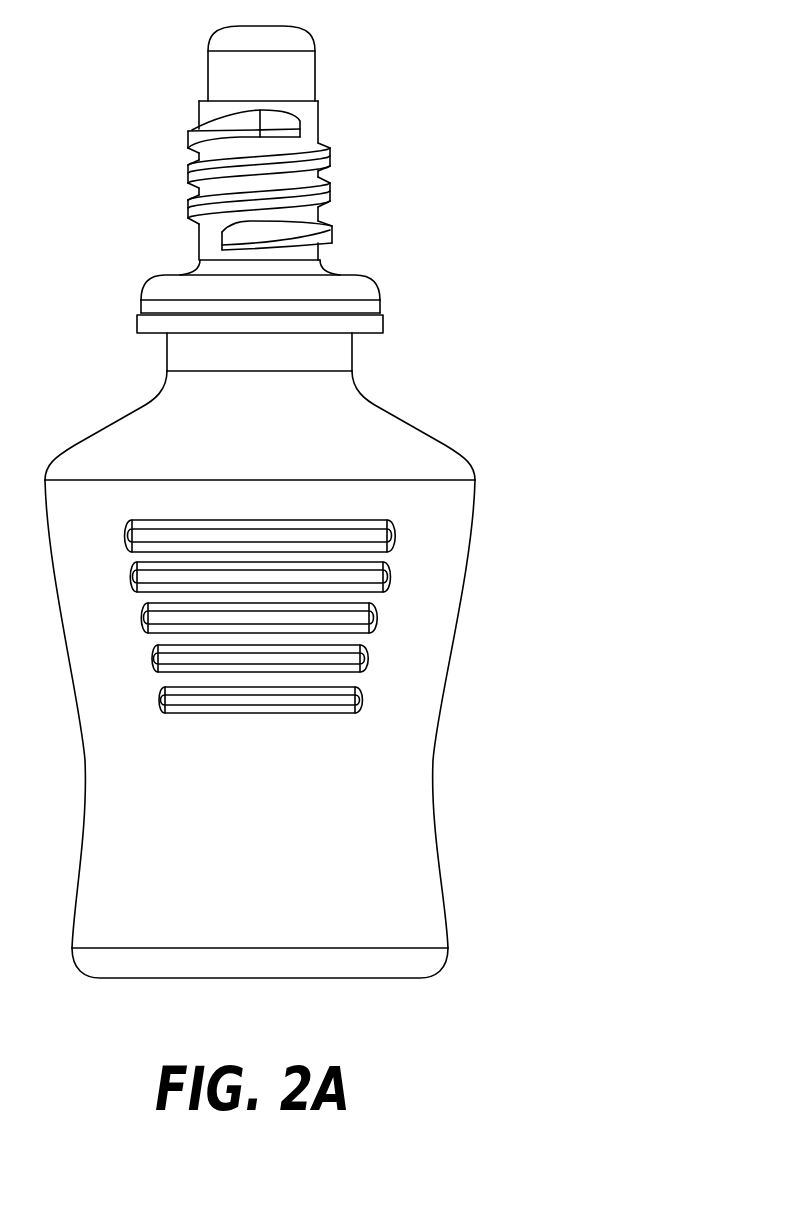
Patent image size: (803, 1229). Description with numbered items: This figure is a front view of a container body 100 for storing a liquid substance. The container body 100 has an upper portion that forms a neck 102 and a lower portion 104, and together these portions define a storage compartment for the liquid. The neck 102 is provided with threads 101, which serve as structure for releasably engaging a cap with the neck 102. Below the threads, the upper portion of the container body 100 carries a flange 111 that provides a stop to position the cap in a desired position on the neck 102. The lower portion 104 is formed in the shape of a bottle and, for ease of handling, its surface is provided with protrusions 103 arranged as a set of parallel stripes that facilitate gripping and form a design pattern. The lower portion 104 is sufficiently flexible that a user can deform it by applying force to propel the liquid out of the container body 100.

The container body 100 is at (353, 502).
The threads 101 is at (316, 150).
The neck 102 is at (333, 233).
The protrusions 103 is at (367, 617).
The lower portion 104 is at (345, 775).
The flange 111 is at (178, 316).